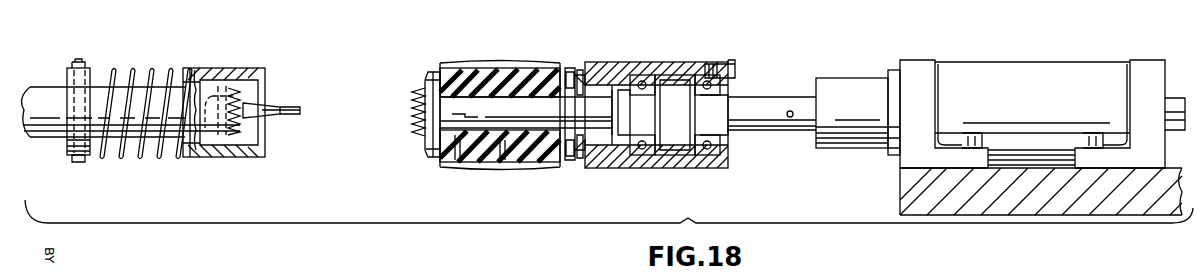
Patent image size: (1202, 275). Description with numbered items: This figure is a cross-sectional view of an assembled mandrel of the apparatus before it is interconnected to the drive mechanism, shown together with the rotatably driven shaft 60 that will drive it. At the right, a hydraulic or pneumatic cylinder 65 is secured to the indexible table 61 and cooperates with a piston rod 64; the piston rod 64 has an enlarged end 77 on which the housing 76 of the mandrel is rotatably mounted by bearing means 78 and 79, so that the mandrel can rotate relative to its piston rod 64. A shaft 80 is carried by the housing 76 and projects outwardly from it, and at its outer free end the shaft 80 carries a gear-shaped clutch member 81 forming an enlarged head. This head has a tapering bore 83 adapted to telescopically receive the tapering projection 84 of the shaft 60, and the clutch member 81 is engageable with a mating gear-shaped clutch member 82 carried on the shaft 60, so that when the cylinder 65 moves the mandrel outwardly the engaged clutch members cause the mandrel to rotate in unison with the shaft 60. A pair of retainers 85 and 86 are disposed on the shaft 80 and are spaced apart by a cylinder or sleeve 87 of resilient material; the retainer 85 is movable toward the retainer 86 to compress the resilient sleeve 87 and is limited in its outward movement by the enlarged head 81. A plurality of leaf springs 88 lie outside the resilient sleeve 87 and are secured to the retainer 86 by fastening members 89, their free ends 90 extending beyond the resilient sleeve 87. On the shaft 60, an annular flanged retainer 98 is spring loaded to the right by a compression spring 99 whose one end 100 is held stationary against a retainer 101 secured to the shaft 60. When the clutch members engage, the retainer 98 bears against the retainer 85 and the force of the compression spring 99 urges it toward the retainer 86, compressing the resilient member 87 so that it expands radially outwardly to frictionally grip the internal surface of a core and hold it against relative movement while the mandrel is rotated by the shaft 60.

The rotatably driven shaft 60 is at (62, 88).
The indexible table 61 is at (905, 190).
The piston rod 64 is at (778, 98).
The hydraulic or pneumatic cylinder 65 is at (1048, 72).
The housing 76 is at (625, 62).
The enlarged end 77 is at (668, 122).
The bearing means 78 is at (648, 78).
The bearing means 79 is at (712, 64).
The shaft 80 is at (525, 103).
The gear-shaped clutch member 81 is at (416, 100).
The gear-shaped clutch member 82 is at (240, 122).
The tapering bore 83 is at (458, 160).
The tapering projection 84 is at (272, 106).
The retainer 85 is at (425, 85).
The retainer 86 is at (570, 80).
The resilient sleeve 87 is at (505, 152).
The leaf springs 88 is at (505, 62).
The fastening members 89 is at (590, 70).
The free ends 90 is at (435, 72).
The annular flanged retainer 98 is at (255, 68).
The compression spring 99 is at (143, 75).
The end of compression spring 100 is at (95, 78).
The retainer 101 is at (70, 146).